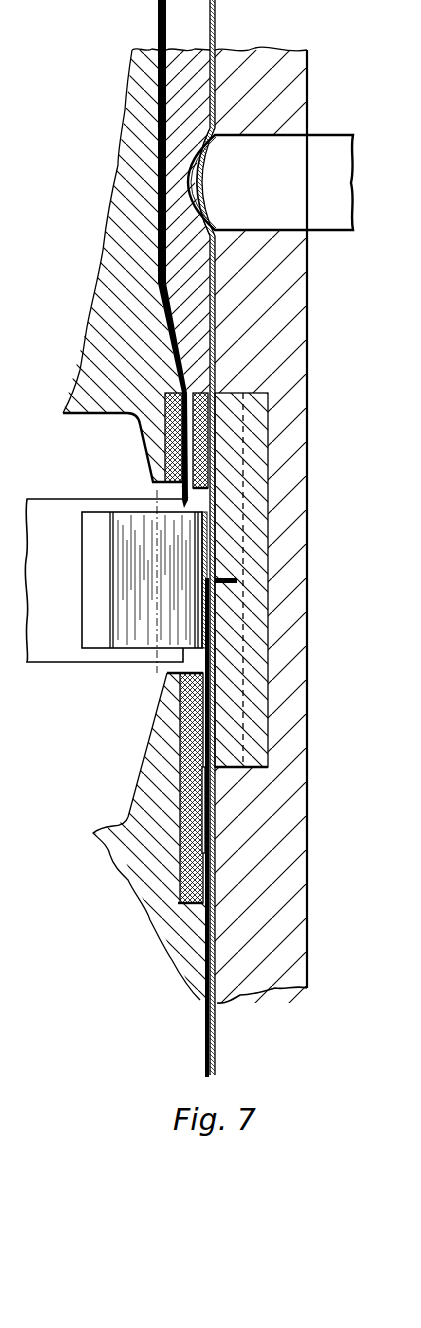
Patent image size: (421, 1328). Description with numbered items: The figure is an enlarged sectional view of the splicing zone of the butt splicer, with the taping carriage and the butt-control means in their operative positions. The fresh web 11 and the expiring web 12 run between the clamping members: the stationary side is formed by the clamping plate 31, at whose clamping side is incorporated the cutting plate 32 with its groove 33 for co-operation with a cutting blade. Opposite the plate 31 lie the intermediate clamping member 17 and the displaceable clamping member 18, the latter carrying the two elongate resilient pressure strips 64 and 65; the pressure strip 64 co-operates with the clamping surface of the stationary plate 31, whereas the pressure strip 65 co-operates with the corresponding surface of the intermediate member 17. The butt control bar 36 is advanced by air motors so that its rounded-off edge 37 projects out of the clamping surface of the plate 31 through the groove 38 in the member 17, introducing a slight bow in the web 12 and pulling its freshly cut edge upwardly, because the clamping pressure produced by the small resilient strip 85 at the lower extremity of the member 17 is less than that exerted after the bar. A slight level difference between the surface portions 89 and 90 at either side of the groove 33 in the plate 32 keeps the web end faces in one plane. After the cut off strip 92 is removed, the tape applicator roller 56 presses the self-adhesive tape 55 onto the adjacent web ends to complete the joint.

The fresh web 11 is at (157, 9).
The expiring web 12 is at (215, 10).
The clamping member 17 is at (177, 238).
The clamping member 18 is at (143, 85).
The clamping plate 31 is at (293, 65).
The cutting plate 32 is at (247, 467).
The groove 33 is at (265, 577).
The butt control bar 36 is at (332, 143).
The rounded-off edge 37 is at (220, 210).
The groove 38 is at (183, 143).
The self-adhesive tape 55 is at (187, 613).
The tape applicator roller 56 is at (143, 568).
The pressure strip 64 is at (193, 713).
The pressure strip 65 is at (170, 430).
The resilient strip 85 is at (207, 420).
The surface portion 89 is at (207, 542).
The surface portion 90 is at (217, 673).
The cut off strip 92 is at (148, 518).